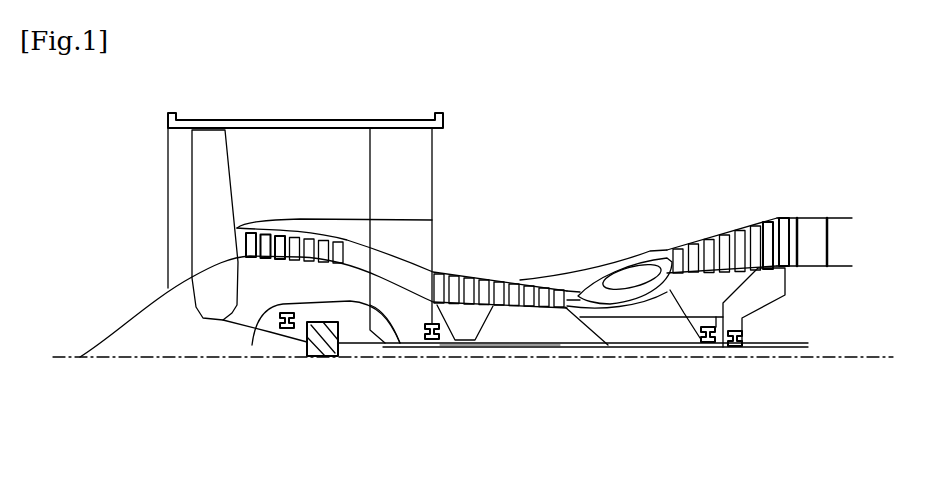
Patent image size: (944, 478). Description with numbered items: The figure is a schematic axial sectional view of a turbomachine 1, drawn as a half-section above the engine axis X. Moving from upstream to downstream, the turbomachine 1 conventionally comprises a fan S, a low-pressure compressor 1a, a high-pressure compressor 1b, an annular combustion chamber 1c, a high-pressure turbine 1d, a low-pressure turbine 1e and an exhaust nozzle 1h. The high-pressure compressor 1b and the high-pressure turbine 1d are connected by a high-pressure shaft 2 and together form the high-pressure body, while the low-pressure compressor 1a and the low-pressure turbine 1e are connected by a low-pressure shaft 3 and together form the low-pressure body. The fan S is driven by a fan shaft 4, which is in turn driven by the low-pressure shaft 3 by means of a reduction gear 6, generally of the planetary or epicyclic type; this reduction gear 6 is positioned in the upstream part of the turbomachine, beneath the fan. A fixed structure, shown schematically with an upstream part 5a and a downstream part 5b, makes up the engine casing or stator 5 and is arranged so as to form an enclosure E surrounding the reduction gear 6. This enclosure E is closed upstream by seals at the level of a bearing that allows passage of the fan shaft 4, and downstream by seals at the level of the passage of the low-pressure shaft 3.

The turbomachine 1 is at (546, 155).
The low-pressure compressor 1a is at (267, 228).
The high-pressure compressor 1b is at (463, 277).
The annular combustion chamber 1c is at (628, 273).
The high-pressure turbine 1d is at (670, 262).
The low-pressure turbine 1e is at (783, 230).
The exhaust nozzle 1h is at (837, 245).
The high-pressure shaft 2 is at (603, 317).
The low-pressure shaft 3 is at (527, 348).
The fan shaft 4 is at (276, 322).
The engine casing or stator 5 is at (352, 290).
The upstream part 5a is at (252, 345).
The downstream part 5b is at (417, 343).
The reduction gear 6 is at (327, 360).
The enclosure E is at (348, 320).
The fan S is at (202, 183).
The engine axis X is at (58, 358).